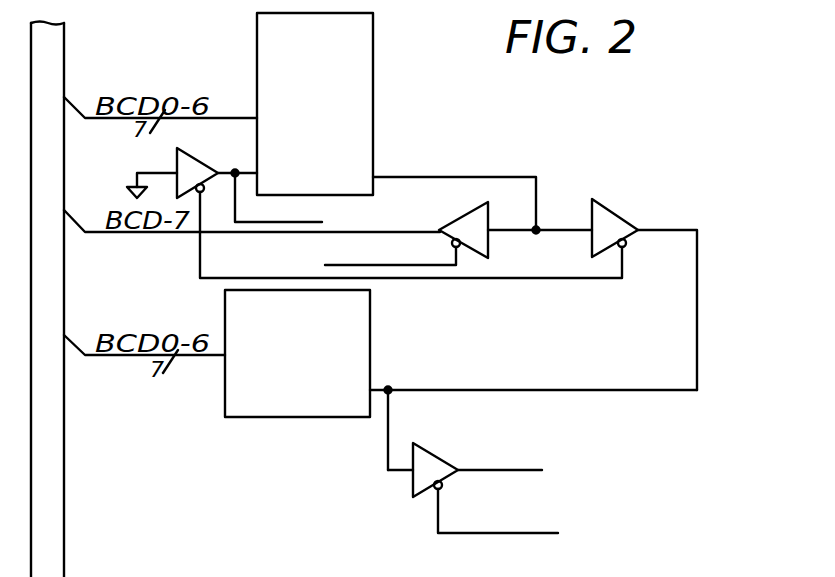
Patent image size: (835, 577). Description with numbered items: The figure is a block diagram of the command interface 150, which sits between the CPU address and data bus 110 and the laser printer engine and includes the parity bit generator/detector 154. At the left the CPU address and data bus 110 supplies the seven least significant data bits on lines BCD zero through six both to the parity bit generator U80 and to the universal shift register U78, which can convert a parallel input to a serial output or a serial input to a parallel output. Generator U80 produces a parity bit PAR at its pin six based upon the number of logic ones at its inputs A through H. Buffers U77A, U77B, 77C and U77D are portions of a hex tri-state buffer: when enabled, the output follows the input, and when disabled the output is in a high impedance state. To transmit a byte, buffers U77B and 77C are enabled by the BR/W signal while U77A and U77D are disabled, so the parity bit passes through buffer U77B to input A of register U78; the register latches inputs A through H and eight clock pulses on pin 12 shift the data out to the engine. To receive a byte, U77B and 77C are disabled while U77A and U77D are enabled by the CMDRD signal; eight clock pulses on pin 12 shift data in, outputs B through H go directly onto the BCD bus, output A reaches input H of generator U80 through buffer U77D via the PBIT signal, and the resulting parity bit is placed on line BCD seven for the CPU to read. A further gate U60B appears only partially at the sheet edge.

The command interface 150 is at (668, 136).
The CPU address and data bus 110 is at (64, 505).
The tri-state buffer portion 77C is at (233, 143).
The parity bit generator U80 is at (398, 123).
The parity bit generator/detector 154 is at (326, 162).
The tri-state buffer portion U77A is at (489, 244).
The tri-state buffer portion U77B is at (618, 215).
The universal shift register U78 is at (461, 380).
The clock pin of register U78 12 is at (376, 310).
The tri-state buffer portion U77D is at (438, 455).
The gate U60B is at (762, 570).